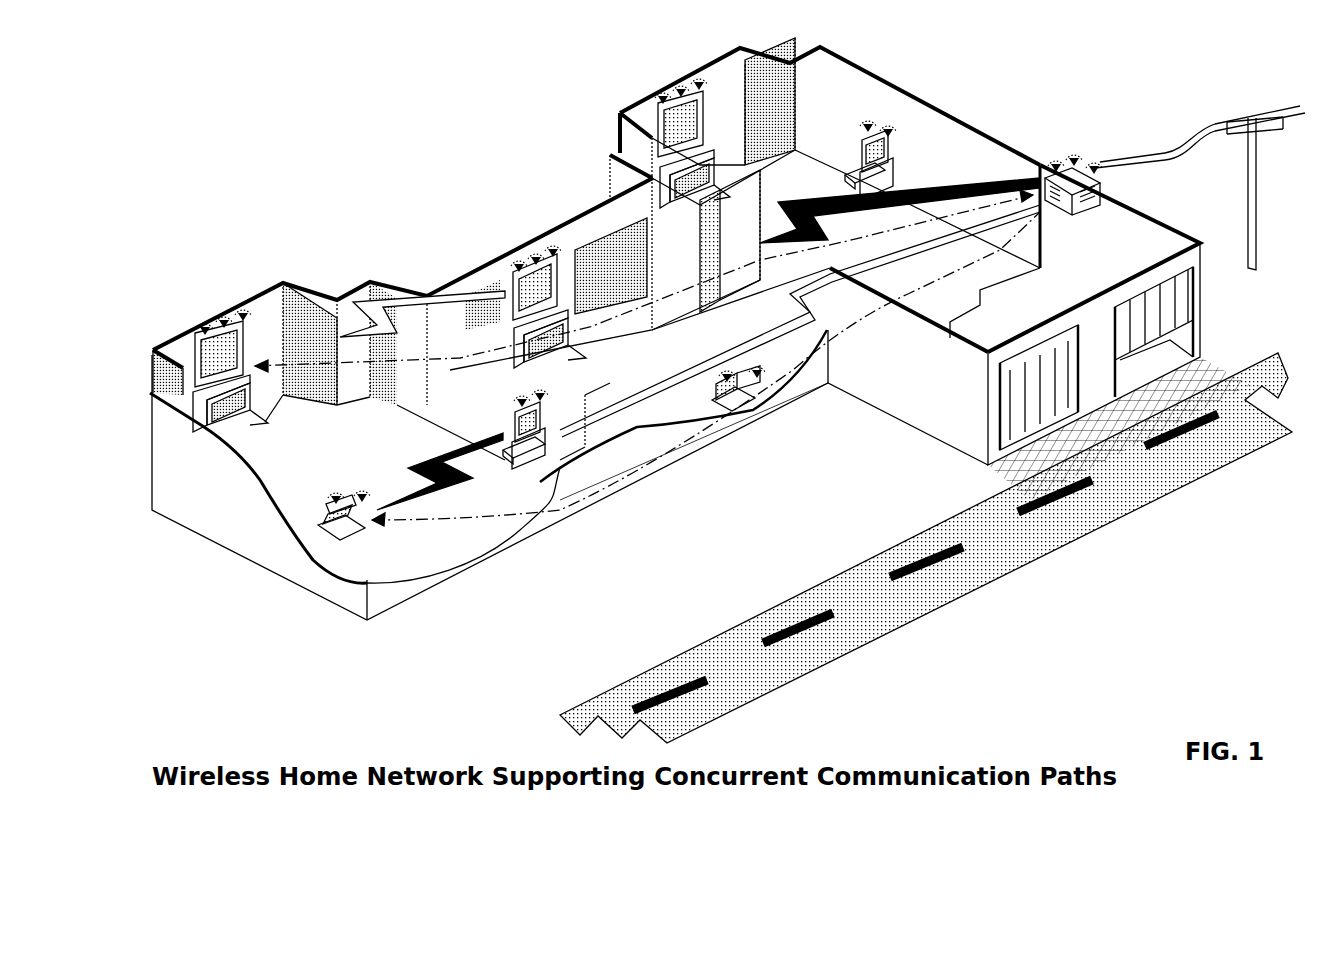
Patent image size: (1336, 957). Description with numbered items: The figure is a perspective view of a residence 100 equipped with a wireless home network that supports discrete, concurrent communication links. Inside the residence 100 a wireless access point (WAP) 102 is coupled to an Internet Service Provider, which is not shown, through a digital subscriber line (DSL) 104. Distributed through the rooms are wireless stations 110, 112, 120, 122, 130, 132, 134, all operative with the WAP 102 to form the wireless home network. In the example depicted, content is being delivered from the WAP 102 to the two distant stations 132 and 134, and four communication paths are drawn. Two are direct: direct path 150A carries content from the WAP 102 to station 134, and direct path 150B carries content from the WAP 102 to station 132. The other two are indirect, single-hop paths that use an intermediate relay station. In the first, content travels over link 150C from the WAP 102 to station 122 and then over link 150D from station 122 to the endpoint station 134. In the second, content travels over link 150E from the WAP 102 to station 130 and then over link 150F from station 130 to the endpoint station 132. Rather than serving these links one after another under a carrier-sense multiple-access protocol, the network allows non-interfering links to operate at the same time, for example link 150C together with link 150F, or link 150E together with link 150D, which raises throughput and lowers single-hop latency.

The residence 100 is at (355, 620).
The wireless access point (WAP) 102 is at (1055, 223).
The digital subscriber line (DSL) 104 is at (1190, 152).
The wireless station 110 is at (868, 130).
The wireless station 112 is at (702, 115).
The wireless station 120 is at (712, 403).
The wireless station 122 is at (562, 262).
The wireless station 130 is at (543, 429).
The wireless station 132 is at (322, 525).
The wireless station 134 is at (198, 335).
The direct communication path 150A is at (628, 322).
The direct communication path 150B is at (678, 472).
The link 150C is at (800, 205).
The link 150D is at (393, 330).
The link 150E is at (812, 305).
The link 150F is at (433, 467).